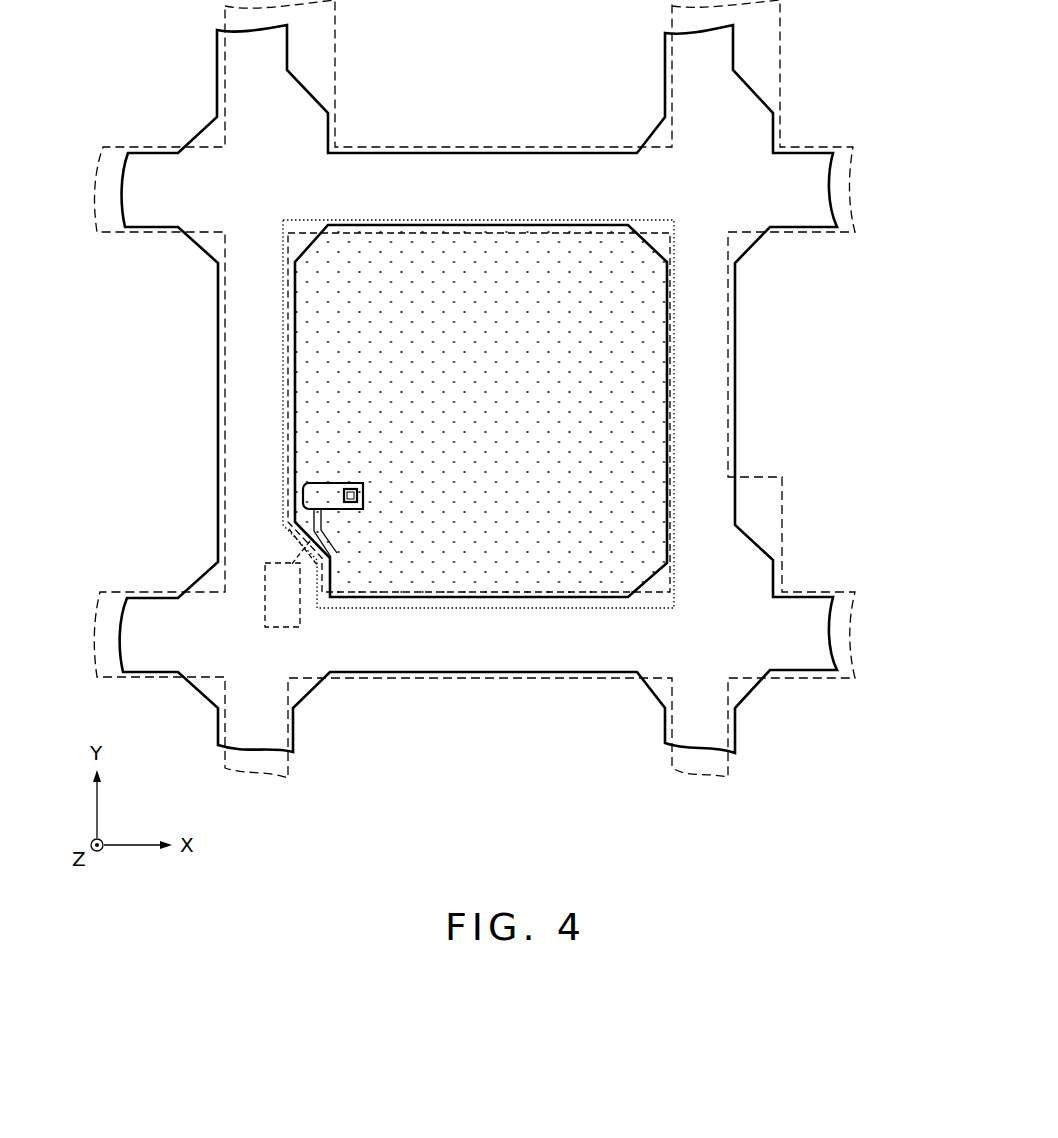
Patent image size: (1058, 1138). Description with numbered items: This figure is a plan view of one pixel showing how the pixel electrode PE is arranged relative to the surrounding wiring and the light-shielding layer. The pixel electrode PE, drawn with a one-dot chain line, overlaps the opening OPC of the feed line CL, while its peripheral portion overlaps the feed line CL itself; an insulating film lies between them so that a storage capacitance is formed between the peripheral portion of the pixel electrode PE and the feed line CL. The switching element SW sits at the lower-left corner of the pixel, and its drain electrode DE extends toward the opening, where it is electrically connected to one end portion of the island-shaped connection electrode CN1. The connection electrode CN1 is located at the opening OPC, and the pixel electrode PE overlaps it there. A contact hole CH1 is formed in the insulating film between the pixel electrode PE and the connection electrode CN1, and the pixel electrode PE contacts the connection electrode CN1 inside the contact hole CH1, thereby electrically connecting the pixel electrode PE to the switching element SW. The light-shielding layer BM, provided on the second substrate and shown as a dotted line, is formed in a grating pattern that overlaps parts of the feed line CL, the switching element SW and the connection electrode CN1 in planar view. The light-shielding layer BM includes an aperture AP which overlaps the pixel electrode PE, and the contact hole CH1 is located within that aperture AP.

The light-shielding layer BM is at (853, 189).
The feed line CL is at (757, 246).
The aperture AP is at (445, 238).
The pixel electrode PE is at (668, 395).
The opening of the feed line OPC is at (662, 471).
The connection electrode CN1 is at (303, 494).
The contact hole CH1 is at (350, 485).
The drain electrode DE is at (317, 525).
The switching element SW is at (277, 563).